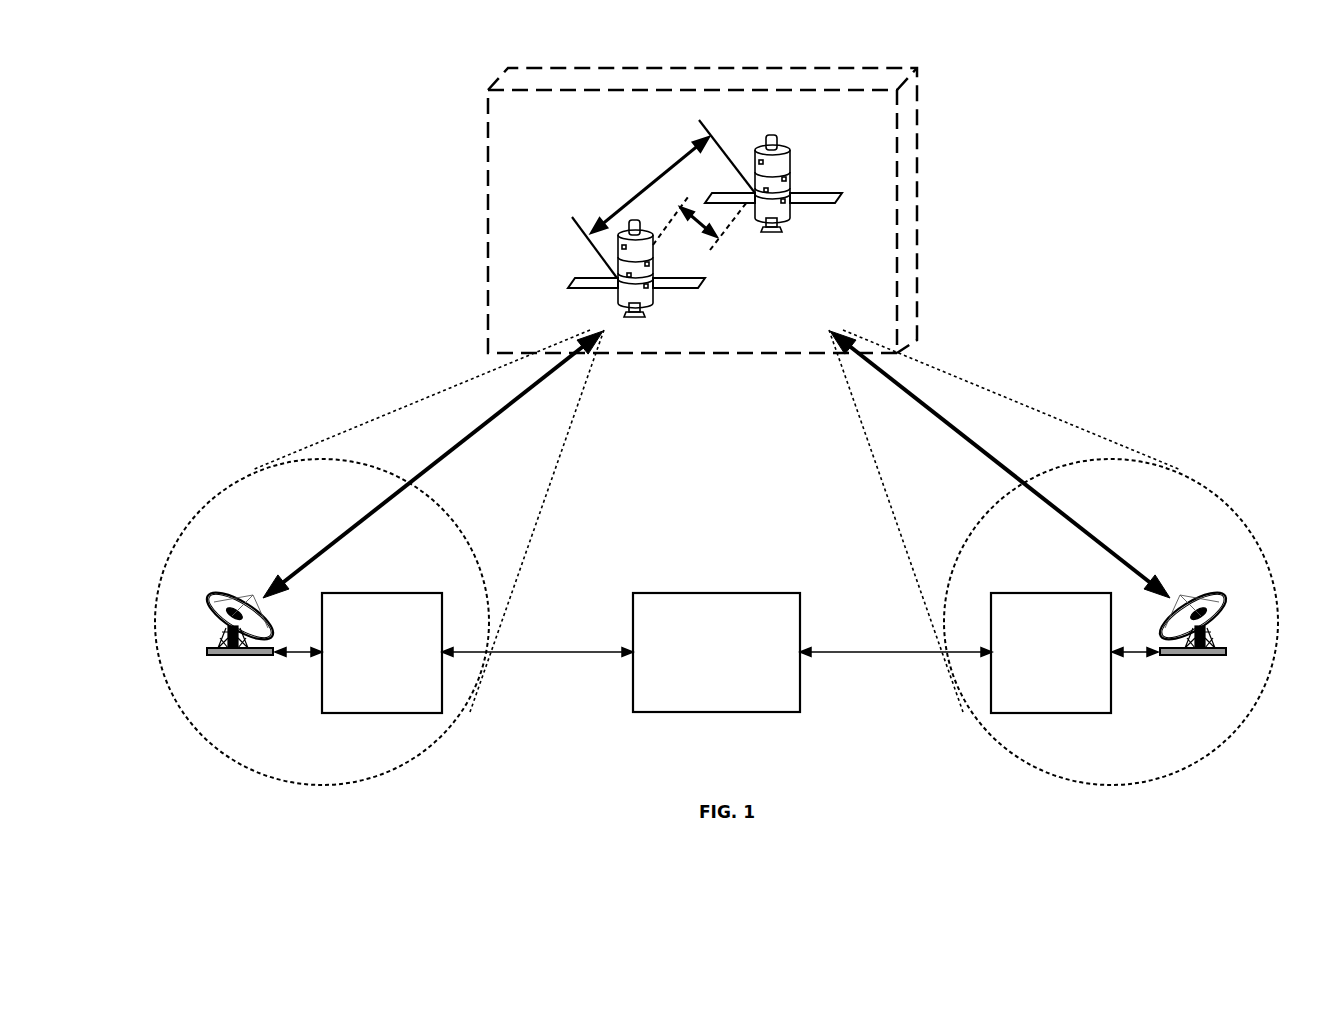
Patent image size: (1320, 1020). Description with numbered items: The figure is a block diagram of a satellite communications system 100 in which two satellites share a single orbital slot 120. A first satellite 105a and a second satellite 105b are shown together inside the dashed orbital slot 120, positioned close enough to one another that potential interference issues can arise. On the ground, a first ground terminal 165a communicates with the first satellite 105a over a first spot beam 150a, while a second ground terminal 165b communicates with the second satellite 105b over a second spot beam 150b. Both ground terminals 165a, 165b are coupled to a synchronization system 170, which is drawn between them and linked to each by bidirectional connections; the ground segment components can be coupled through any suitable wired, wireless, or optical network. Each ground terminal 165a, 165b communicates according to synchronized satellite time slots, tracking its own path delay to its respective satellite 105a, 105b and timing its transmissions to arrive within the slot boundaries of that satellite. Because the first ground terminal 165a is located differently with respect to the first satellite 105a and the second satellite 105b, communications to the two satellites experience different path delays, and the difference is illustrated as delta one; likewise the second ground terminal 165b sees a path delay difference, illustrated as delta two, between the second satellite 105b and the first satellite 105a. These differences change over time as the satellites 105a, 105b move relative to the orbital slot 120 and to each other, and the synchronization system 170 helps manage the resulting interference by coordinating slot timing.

The satellite communications system 100 is at (264, 128).
The orbital slot 120 is at (702, 210).
The first satellite 105a is at (650, 305).
The second satellite 105b is at (787, 220).
The first spot beam 150a is at (379, 557).
The second spot beam 150b is at (1053, 557).
The first ground terminal 165a is at (321, 648).
The second ground terminal 165b is at (1112, 648).
The synchronization system 170 is at (717, 652).